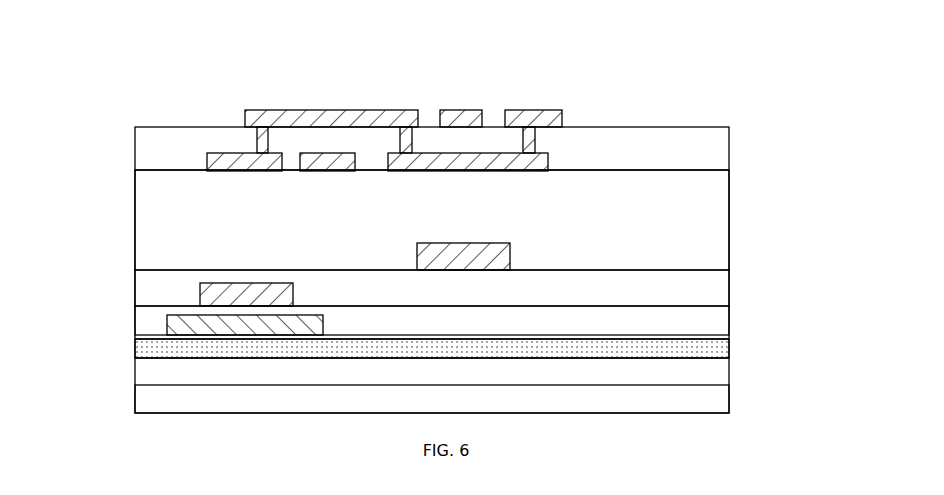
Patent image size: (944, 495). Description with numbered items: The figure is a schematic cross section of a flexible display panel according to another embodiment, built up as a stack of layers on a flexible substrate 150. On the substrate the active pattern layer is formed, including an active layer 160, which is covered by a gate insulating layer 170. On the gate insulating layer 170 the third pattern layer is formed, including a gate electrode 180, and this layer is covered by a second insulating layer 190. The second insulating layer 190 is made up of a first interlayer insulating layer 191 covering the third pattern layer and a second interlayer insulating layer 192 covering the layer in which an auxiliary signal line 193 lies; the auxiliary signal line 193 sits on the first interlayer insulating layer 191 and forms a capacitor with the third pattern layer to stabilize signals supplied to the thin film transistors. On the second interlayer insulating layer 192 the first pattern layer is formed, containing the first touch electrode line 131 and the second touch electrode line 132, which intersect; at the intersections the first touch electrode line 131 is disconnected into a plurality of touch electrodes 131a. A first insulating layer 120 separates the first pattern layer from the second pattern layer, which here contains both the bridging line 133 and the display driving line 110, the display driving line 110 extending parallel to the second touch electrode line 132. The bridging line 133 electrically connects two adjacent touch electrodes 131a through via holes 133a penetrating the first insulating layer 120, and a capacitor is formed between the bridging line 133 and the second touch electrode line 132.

The display driving line 110 is at (343, 171).
The first insulating layer 120 is at (662, 126).
The first touch electrode line 131 is at (403, 83).
The touch electrode 131a is at (388, 109).
The second touch electrode line 132 is at (459, 128).
The bridging line 133 is at (222, 163).
The via hole 133a is at (400, 140).
The flexible substrate 150 is at (712, 400).
The active layer 160 is at (172, 328).
The gate insulating layer 170 is at (138, 312).
The gate electrode 180 is at (243, 283).
The second insulating layer 190 is at (486, 238).
The first interlayer insulating layer 191 is at (731, 285).
The second interlayer insulating layer 192 is at (730, 240).
The auxiliary signal line 193 is at (473, 248).